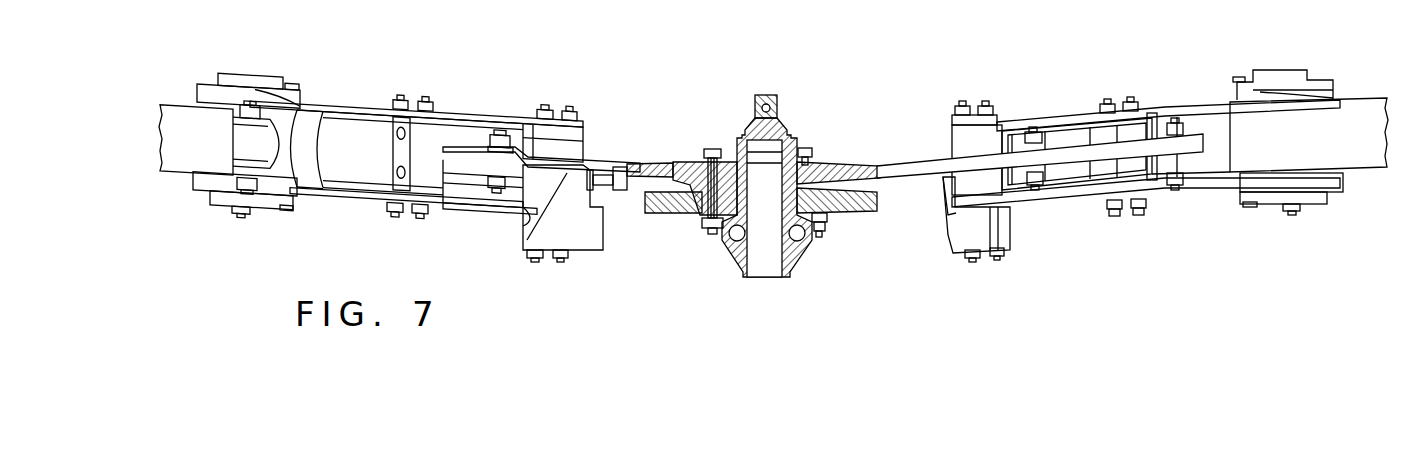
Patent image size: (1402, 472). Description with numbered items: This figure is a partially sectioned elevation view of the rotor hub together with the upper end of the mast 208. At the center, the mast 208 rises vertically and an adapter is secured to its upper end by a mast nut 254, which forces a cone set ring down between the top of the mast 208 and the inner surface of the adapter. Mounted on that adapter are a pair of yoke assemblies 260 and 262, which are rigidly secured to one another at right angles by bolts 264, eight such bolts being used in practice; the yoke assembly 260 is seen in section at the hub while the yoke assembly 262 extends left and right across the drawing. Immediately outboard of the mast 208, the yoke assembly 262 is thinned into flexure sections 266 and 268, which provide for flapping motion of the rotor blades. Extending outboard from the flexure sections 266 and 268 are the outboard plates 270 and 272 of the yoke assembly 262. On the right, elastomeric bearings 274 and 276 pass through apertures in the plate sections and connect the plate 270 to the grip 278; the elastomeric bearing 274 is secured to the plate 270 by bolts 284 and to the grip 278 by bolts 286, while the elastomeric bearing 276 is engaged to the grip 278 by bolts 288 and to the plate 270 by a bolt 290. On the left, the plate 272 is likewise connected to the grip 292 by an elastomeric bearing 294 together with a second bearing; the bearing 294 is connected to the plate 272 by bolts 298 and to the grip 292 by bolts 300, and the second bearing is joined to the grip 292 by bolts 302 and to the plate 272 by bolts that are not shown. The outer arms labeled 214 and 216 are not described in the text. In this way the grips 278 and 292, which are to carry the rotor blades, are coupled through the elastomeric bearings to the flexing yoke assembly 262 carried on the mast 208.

The mast 208 is at (790, 258).
The left arm 214 is at (210, 154).
The right arm 216 is at (1308, 150).
The mast nut 254 is at (777, 110).
The yoke assembly 260 is at (840, 205).
The yoke assembly 262 is at (815, 162).
The bolts 264 is at (708, 147).
The flexure section 266 is at (862, 164).
The flexure section 268 is at (655, 163).
The outboard plate 270 is at (1078, 170).
The outboard plate 272 is at (462, 148).
The elastomeric bearing 274 is at (966, 150).
The elastomeric bearing 276 is at (1140, 120).
The grip 278 is at (1036, 115).
The bolts 284 is at (1036, 190).
The bolts 286 is at (985, 101).
The bolts 288 is at (1130, 97).
The bolt 290 is at (1177, 190).
The grip 292 is at (484, 114).
The elastomeric bearing 294 is at (528, 183).
The bolts 298 is at (497, 188).
The bolts 300 is at (565, 108).
The bolts 302 is at (424, 93).